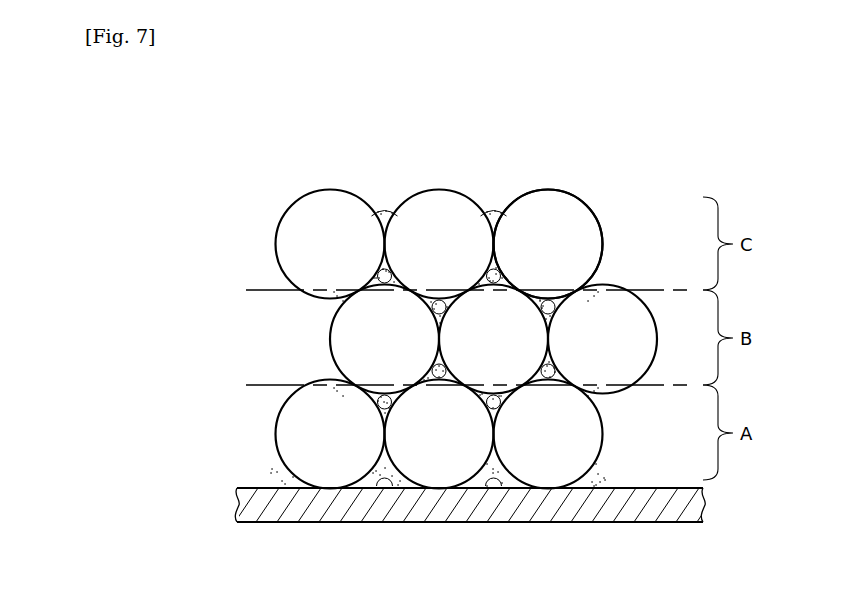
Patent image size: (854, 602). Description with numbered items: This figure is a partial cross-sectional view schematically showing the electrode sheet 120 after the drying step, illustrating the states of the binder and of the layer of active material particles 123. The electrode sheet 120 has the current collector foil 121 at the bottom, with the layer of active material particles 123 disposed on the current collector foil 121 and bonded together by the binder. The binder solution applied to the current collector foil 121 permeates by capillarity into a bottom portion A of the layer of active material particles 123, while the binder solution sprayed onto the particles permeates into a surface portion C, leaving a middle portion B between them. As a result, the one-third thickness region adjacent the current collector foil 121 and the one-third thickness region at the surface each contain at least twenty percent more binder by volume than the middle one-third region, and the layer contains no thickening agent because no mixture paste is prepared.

The electrode sheet 120 is at (333, 152).
The current collector foil 121 is at (475, 523).
The active material particles 123 is at (571, 194).